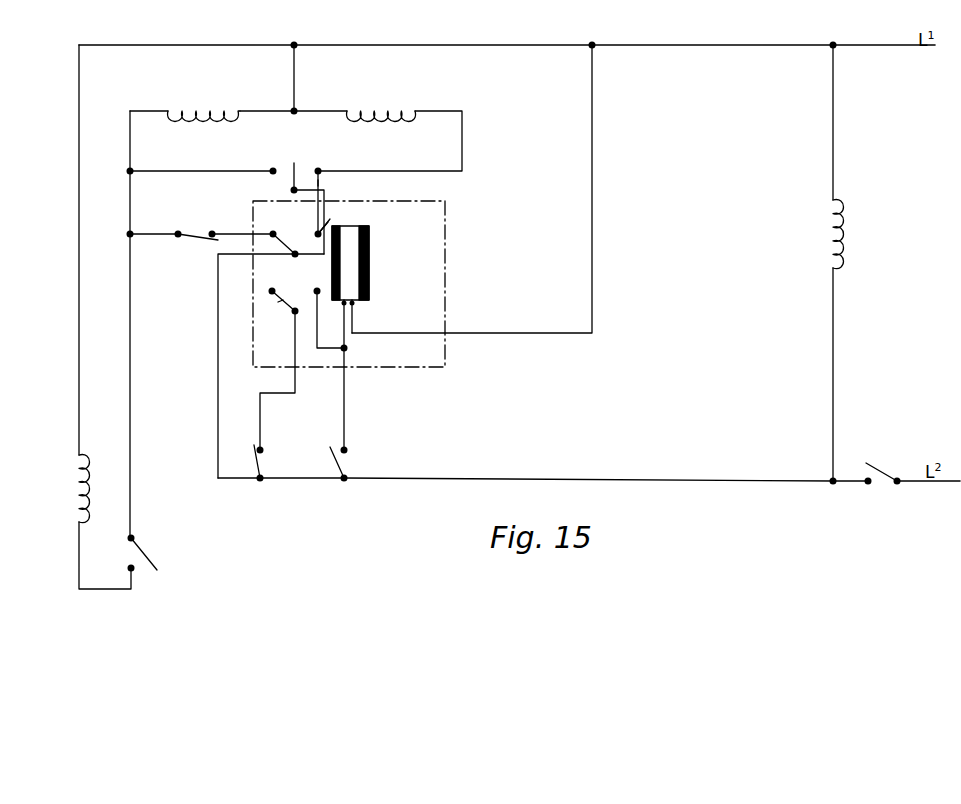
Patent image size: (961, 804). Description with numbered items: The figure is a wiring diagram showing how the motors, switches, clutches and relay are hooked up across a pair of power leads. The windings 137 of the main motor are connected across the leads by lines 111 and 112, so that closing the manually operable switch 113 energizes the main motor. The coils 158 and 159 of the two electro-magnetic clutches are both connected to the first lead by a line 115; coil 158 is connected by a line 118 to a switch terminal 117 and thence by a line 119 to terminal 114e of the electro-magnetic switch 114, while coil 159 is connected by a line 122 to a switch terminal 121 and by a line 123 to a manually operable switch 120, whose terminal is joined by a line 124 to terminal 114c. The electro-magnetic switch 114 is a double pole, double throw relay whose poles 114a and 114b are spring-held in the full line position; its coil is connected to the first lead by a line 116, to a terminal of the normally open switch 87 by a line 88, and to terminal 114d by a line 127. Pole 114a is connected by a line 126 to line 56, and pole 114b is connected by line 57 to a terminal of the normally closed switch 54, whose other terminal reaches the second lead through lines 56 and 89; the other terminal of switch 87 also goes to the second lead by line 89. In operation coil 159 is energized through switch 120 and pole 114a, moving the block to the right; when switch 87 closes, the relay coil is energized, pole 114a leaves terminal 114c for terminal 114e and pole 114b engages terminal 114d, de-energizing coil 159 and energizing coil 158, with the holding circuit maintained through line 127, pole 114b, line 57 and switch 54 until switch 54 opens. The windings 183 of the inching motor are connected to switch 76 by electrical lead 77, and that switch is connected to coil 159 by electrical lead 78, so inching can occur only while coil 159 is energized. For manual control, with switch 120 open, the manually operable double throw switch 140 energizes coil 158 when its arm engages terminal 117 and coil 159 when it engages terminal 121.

The line 115 is at (294, 82).
The coil 159 is at (208, 104).
The coil 158 is at (358, 110).
The line 118 is at (462, 152).
The line 116 is at (592, 198).
The line 112 is at (833, 148).
The windings 137 is at (846, 248).
The line 111 is at (833, 350).
The manually operable switch 113 is at (886, 456).
The line 122 is at (188, 172).
The switch terminal 121 is at (272, 168).
The switch terminal 117 is at (320, 170).
The manually operable double throw switch 140 is at (292, 188).
The line 119 is at (318, 183).
The line 123 is at (158, 226).
The line 124 is at (228, 236).
The manually operable switch 120 is at (205, 238).
The line 126 is at (216, 346).
The terminal 114c is at (278, 230).
The pole 114a is at (304, 242).
The terminal 114e is at (328, 232).
The terminal 114d is at (314, 289).
The pole 114b is at (282, 300).
The electro-magnetic switch 114 is at (370, 280).
The line 127 is at (318, 334).
The line 57 is at (295, 393).
The line 88 is at (344, 403).
The switch 54 is at (258, 468).
The switch 87 is at (340, 468).
The line 56 is at (297, 480).
The line 89 is at (532, 479).
The electrical lead 78 is at (131, 466).
The windings 183 is at (72, 508).
The electrical lead 77 is at (79, 568).
The switch 76 is at (146, 556).